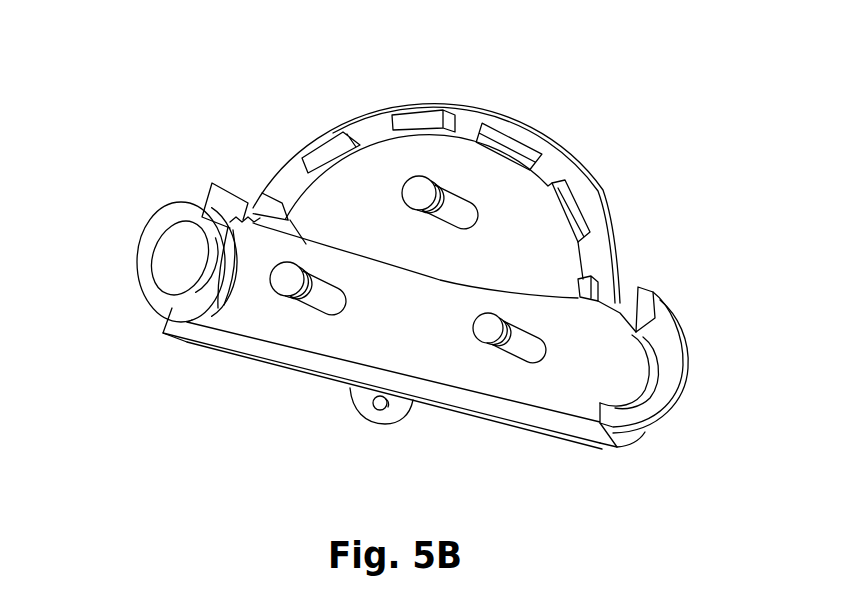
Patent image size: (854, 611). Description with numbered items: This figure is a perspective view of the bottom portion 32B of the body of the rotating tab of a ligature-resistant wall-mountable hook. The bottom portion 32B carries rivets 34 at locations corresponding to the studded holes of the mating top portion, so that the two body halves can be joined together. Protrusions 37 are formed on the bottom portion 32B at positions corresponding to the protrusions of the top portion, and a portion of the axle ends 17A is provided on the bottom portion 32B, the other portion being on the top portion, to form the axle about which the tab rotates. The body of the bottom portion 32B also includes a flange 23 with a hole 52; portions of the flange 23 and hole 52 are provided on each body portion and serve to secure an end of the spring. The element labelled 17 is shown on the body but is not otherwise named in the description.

The bottom portion 32B is at (499, 167).
The body/base member 17 is at (257, 339).
The axle ends 17A is at (148, 250).
The rivets 34 is at (412, 182).
The protrusions 37 is at (512, 142).
The hole 52 is at (363, 405).
The flange 23 is at (383, 423).